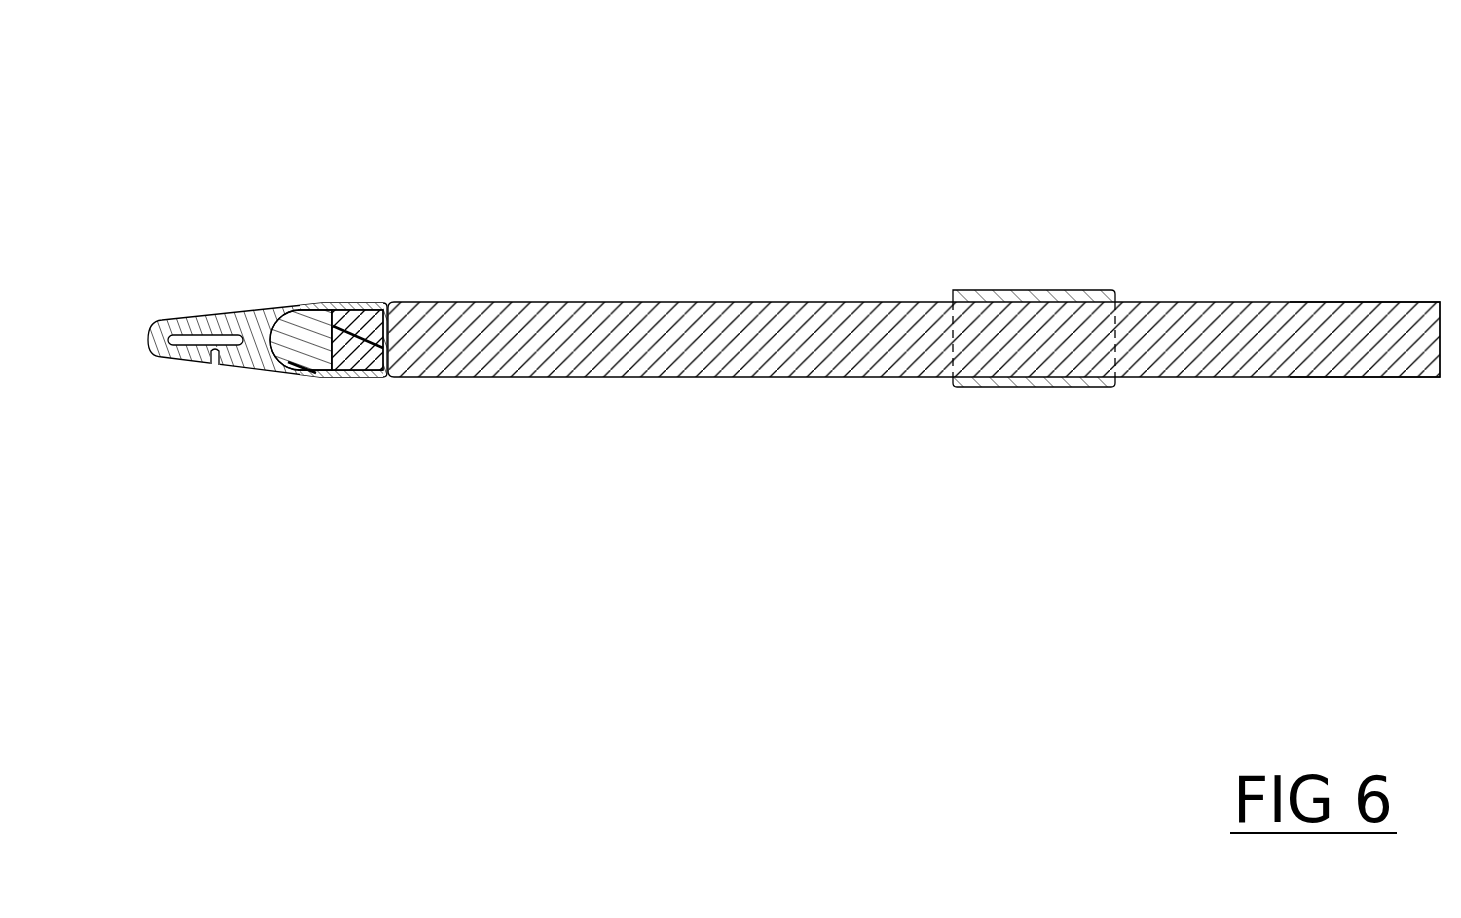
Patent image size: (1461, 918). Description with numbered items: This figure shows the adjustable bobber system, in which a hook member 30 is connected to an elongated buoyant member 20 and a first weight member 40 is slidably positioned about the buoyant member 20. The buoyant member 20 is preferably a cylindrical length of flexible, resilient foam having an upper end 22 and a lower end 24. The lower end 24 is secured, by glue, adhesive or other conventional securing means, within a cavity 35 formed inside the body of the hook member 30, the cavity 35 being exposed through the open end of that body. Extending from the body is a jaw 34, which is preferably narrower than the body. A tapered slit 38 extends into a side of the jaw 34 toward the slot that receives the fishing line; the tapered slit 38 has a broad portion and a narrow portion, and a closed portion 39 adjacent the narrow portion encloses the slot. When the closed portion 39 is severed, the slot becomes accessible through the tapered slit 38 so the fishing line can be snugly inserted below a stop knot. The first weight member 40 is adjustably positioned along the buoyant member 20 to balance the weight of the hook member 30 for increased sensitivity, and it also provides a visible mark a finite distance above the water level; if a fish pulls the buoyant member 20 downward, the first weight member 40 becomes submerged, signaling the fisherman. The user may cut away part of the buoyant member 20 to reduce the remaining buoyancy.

The buoyant member 20 is at (826, 300).
The upper end 22 is at (1282, 301).
The lower end 24 is at (627, 303).
The hook member 30 is at (333, 394).
The jaw 34 is at (162, 322).
The cavity 35 is at (387, 303).
The tapered slit 38 is at (212, 362).
The closed portion 39 is at (217, 354).
The first weight member 40 is at (1023, 387).